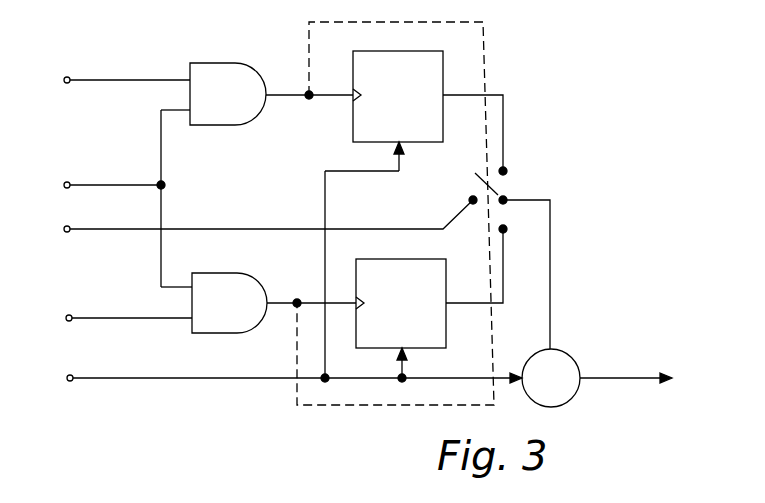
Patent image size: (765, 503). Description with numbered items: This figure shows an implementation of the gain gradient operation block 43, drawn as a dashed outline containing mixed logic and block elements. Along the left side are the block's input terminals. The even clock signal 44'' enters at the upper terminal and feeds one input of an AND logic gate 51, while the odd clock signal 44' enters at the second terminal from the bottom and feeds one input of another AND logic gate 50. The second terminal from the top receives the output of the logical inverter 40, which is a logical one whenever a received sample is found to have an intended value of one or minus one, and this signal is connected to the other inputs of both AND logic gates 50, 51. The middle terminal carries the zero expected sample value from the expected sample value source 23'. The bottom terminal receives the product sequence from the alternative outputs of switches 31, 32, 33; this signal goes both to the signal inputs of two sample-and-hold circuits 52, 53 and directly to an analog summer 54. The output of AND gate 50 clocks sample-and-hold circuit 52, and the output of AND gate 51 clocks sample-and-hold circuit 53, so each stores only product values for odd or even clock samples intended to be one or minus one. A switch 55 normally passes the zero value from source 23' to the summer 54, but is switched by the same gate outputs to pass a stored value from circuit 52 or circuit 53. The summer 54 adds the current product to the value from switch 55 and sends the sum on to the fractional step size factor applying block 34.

The even clock signal 44'' is at (127, 70).
The logical inverter 40 is at (70, 183).
The expected sample value source 23' is at (268, 216).
The odd clock signal 44' is at (129, 305).
The switch 31 is at (294, 366).
The switch 32 is at (294, 366).
The switch 33 is at (73, 376).
The AND logic gate 51 is at (212, 63).
The AND logic gate 50 is at (213, 273).
The sample-and-hold circuit 53 is at (378, 51).
The sample-and-hold circuit 52 is at (363, 259).
The switch 55 is at (512, 183).
The analog summer 54 is at (560, 349).
The fractional step size factor applying block 34 is at (647, 378).
The gain gradient operation block 43 is at (545, 125).